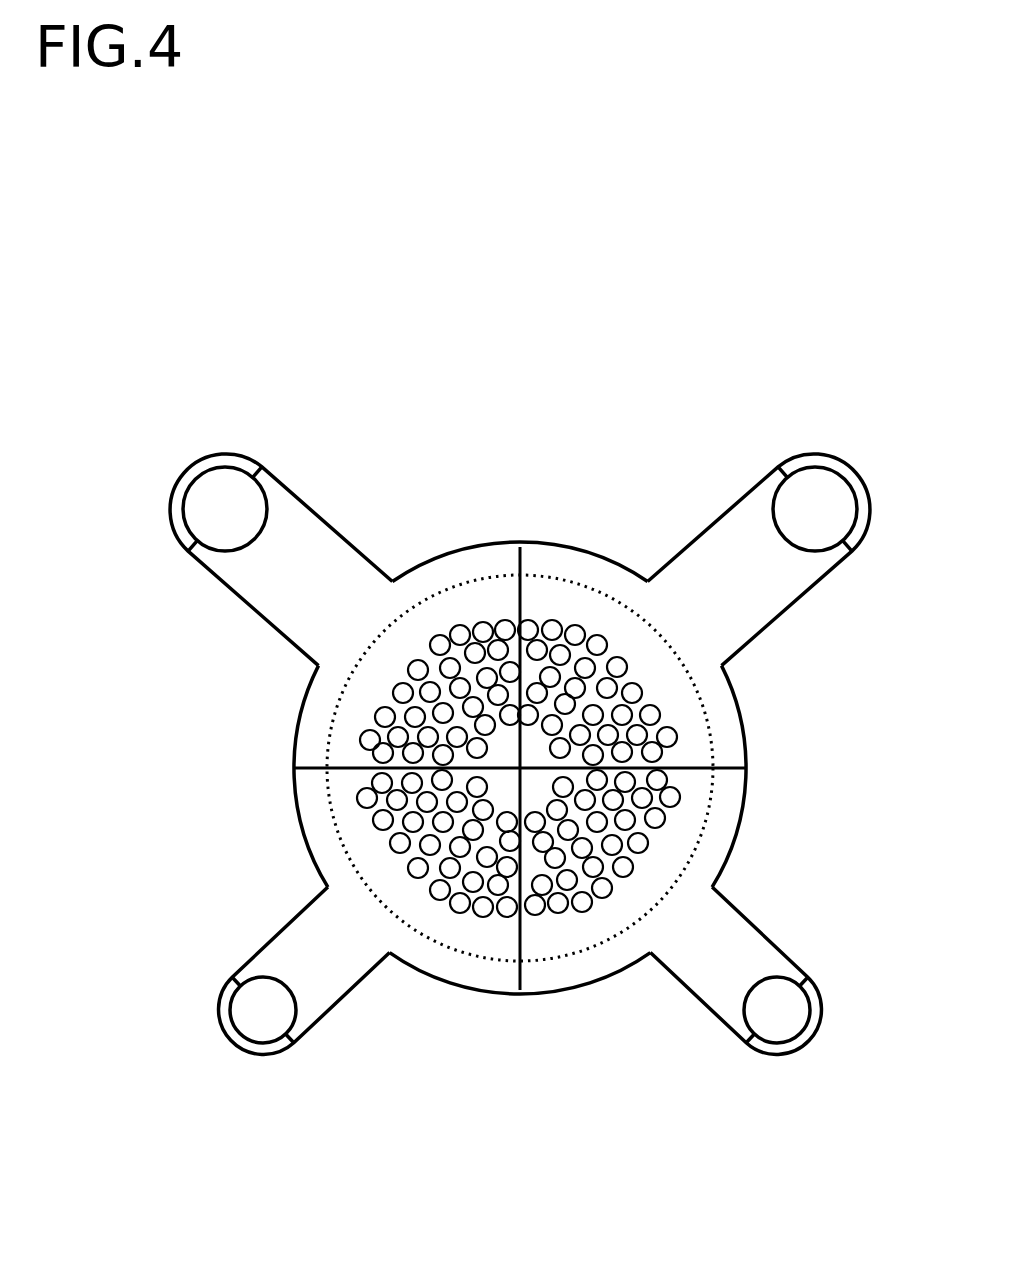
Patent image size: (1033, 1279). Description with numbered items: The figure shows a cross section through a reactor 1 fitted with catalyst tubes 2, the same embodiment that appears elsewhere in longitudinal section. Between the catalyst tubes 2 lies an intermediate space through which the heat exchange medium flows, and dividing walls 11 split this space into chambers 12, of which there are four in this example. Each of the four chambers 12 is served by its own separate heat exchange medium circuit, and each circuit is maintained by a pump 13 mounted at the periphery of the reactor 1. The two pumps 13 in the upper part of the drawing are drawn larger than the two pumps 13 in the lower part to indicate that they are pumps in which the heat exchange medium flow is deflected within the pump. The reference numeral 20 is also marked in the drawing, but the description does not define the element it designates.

The housing 1 is at (567, 567).
The tube holes 2 is at (457, 897).
The partition plate 11 is at (678, 768).
The chambers 12 is at (340, 752).
The mounting lugs 13 is at (152, 553).
The partition wall 20 is at (535, 788).